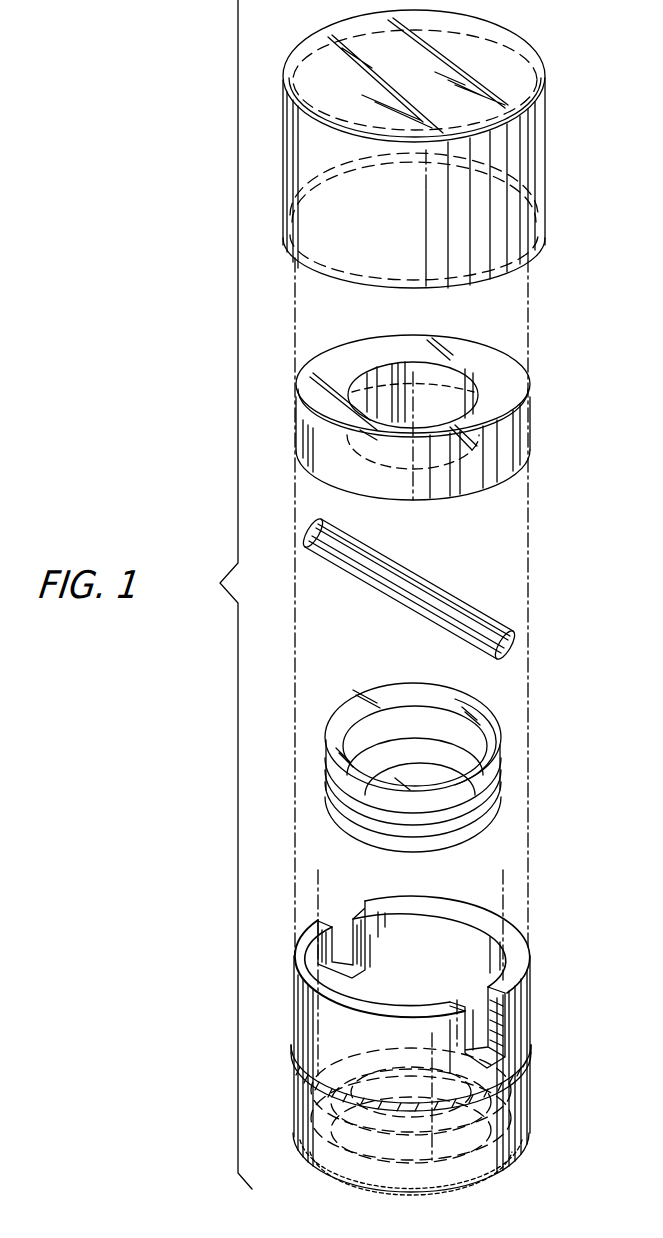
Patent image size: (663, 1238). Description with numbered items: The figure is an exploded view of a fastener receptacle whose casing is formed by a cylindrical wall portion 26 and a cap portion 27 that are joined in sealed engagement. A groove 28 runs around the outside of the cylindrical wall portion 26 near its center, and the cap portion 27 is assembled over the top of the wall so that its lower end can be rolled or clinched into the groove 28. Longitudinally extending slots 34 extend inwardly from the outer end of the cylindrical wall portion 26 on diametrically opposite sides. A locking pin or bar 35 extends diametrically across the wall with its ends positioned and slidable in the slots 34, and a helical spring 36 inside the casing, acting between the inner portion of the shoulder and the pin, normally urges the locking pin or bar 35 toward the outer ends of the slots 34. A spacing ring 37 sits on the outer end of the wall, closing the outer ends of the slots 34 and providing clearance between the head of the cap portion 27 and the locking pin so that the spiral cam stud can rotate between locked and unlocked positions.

The cap portion 27 is at (543, 172).
The spacing ring 37 is at (516, 392).
The locking pin or bar 35 is at (460, 610).
The helical spring 36 is at (500, 748).
The cylindrical wall portion 26 is at (527, 1007).
The longitudinally extending slots 34 is at (353, 933).
The groove 28 is at (527, 1065).